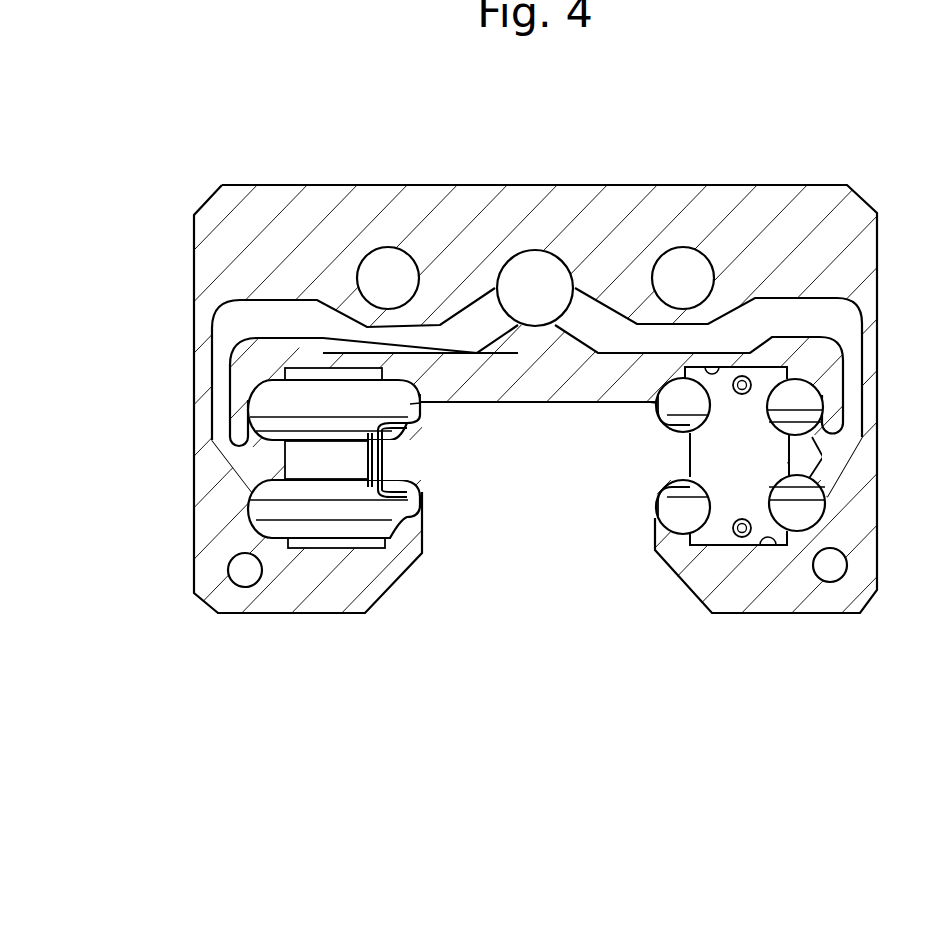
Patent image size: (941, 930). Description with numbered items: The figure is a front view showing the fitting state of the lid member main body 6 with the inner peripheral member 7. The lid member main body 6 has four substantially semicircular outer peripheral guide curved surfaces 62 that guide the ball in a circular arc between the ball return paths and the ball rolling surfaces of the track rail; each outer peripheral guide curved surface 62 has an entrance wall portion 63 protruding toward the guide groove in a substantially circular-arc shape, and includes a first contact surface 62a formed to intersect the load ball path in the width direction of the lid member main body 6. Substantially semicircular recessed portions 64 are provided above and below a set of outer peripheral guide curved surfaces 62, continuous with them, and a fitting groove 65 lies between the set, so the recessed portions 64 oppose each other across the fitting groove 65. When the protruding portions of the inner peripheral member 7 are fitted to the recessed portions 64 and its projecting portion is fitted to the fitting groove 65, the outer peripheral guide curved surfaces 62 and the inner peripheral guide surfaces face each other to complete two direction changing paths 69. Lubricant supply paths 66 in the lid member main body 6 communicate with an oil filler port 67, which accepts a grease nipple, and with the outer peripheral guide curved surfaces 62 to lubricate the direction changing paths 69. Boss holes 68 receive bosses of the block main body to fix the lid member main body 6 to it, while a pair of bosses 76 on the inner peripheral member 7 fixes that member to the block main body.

The lid member main body 6 is at (230, 152).
The inner peripheral member 7 is at (740, 552).
The outer peripheral guide curved surface 62 is at (270, 404).
The first contact surface 62a is at (412, 405).
The entrance wall portion 63 is at (390, 452).
The recessed portion 64 is at (716, 374).
The fitting groove 65 is at (298, 462).
The lubricant supply path 66 is at (298, 315).
The oil filler port 67 is at (572, 272).
The boss hole 68 is at (413, 268).
The direction changing path 69 is at (806, 400).
The boss 76 is at (745, 380).